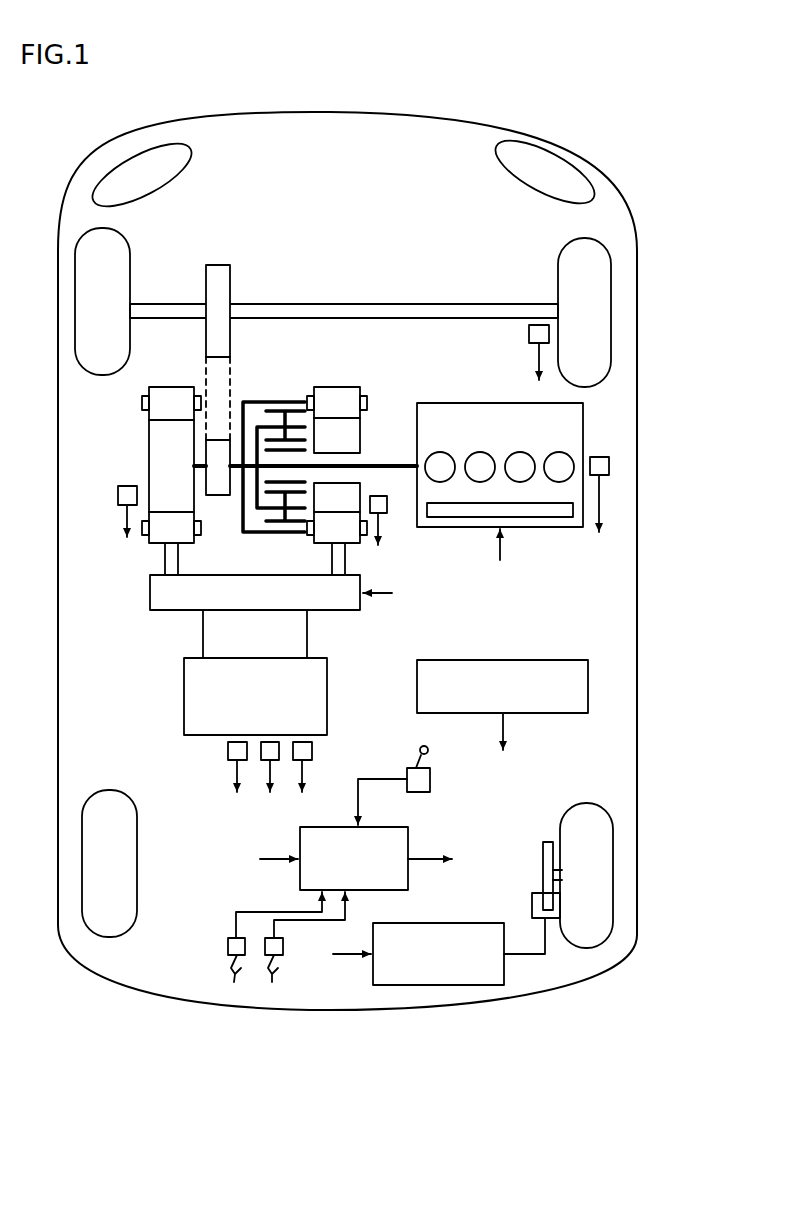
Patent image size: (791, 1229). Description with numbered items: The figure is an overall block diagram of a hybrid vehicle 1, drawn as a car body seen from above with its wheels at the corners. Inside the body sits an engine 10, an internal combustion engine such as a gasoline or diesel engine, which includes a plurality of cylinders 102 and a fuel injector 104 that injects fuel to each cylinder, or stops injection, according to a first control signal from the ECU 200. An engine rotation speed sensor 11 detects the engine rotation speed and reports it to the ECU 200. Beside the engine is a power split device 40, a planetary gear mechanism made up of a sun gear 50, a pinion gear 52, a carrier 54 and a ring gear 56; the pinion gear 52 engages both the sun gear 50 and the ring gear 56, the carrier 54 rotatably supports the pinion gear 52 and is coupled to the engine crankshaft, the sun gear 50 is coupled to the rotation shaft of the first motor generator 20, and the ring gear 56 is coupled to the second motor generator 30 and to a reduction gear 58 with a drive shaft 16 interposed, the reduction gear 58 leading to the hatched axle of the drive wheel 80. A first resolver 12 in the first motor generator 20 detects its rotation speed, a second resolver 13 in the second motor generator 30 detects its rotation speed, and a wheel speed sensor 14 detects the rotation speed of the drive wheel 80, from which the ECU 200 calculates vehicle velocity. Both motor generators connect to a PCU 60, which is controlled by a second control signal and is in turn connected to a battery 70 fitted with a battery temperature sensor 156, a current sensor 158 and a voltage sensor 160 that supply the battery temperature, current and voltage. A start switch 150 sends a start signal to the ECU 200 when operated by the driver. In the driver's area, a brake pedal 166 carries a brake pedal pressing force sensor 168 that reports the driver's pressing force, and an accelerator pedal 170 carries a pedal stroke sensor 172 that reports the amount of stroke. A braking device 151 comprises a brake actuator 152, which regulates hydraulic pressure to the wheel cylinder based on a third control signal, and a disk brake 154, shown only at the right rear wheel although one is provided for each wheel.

The vehicle 1 is at (334, 83).
The engine 10 is at (442, 403).
The engine rotation speed sensor 11 is at (599, 457).
The first resolver 12 is at (386, 497).
The second resolver 13 is at (127, 486).
The wheel speed sensor 14 is at (529, 333).
The drive shaft 16 is at (239, 473).
The first motor generator 20 is at (338, 387).
The second motor generator 30 is at (172, 387).
The power split device 40 is at (290, 385).
The sun gear 50 is at (293, 478).
The pinion gear 52 is at (292, 524).
The carrier 54 is at (258, 508).
The ring gear 56 is at (264, 401).
The reduction gear 58 is at (215, 265).
The PCU 60 is at (150, 590).
The battery 70 is at (184, 697).
The drive wheel 80 is at (567, 239).
The cylinders 102 is at (519, 452).
The fuel injector 104 is at (540, 517).
The start switch 150 is at (559, 646).
The braking device 151 is at (533, 860).
The brake actuator 152 is at (467, 923).
The disk brake 154 is at (554, 929).
The battery temperature sensor 156 is at (228, 750).
The current sensor 158 is at (272, 735).
The voltage sensor 160 is at (312, 751).
The brake pedal 166 is at (235, 982).
The brake pedal pressing force sensor 168 is at (228, 948).
The accelerator pedal 170 is at (273, 982).
The pedal stroke sensor 172 is at (283, 948).
The ECU 200 is at (397, 827).